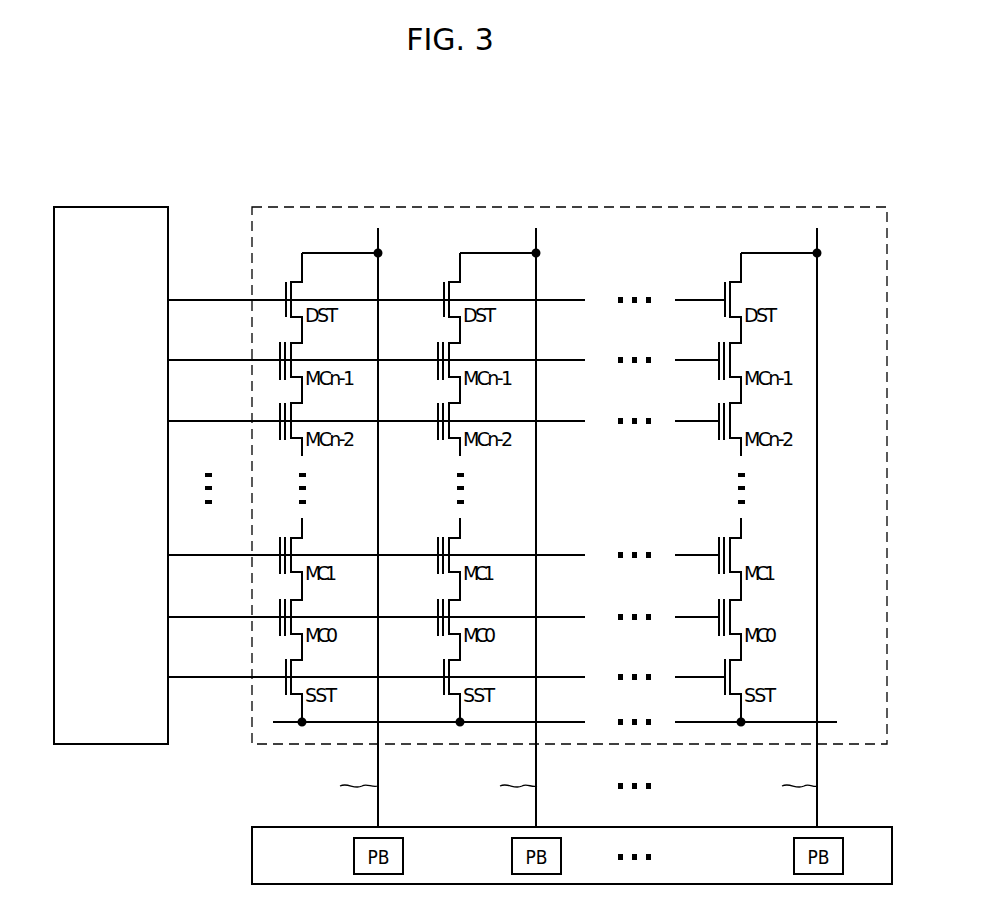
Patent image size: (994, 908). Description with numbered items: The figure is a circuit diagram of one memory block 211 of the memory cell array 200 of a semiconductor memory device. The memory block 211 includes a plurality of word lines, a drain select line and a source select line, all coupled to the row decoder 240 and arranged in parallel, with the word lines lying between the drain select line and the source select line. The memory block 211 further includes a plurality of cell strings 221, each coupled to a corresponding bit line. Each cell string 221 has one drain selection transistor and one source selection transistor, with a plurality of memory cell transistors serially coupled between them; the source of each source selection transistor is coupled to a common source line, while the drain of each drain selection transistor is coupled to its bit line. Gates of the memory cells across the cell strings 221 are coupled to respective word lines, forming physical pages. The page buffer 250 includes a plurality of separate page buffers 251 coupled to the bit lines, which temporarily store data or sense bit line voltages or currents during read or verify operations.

The memory cell array 200 is at (832, 113).
The row decoder 240 is at (111, 207).
The cell string 221 is at (287, 260).
The memory block 211 is at (780, 207).
The page buffer 250 is at (252, 857).
The page buffer PB 251 is at (354, 857).